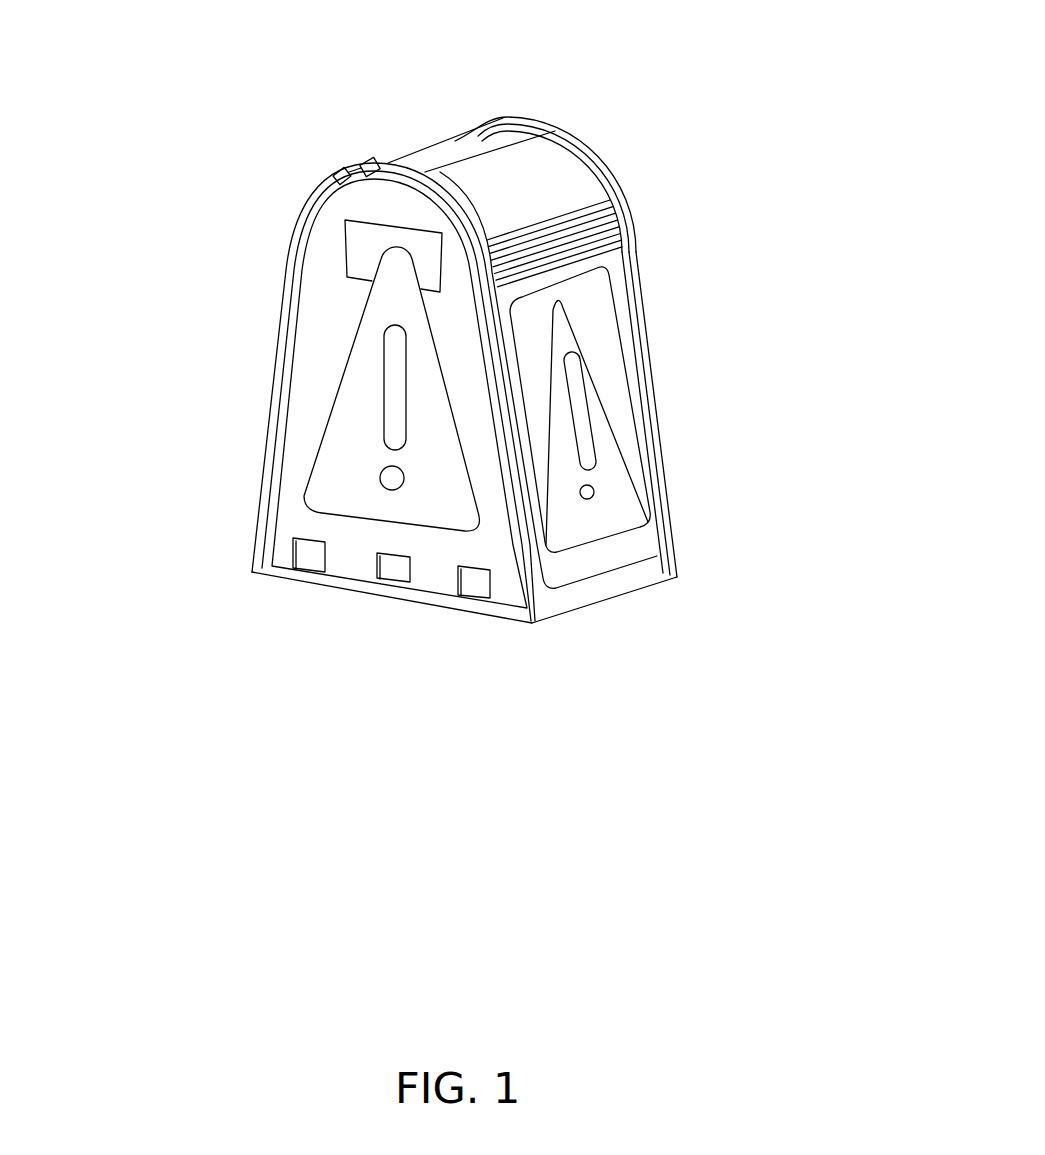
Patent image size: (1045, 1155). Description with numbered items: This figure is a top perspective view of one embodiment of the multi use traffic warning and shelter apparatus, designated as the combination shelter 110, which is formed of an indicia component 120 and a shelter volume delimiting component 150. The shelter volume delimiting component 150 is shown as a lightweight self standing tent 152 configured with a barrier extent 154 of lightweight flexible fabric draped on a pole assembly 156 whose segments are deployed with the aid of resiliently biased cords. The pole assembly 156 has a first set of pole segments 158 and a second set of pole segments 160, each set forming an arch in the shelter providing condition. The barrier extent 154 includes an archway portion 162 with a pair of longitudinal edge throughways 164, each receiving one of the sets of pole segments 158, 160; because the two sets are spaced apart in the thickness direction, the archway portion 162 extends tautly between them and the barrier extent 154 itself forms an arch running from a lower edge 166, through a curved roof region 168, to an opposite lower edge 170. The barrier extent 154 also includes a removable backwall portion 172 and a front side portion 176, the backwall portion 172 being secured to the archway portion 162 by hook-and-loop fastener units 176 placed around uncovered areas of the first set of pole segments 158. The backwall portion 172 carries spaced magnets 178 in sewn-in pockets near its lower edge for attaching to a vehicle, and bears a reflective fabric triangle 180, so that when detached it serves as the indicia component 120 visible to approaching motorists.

The combination shelter 110 is at (232, 350).
The indicia component 120 is at (563, 337).
The shelter volume delimiting component 150 is at (527, 345).
The tent 152 is at (578, 427).
The barrier extent 154 is at (558, 190).
The pole assembly 156 is at (280, 318).
The first set of pole segments 158 is at (273, 398).
The second set of pole segments 160 is at (637, 292).
The archway portion 162 is at (418, 152).
The longitudinal edge throughways 164 is at (655, 470).
The lower edge 166 is at (254, 573).
The curved roof region 168 is at (497, 162).
The opposite lower edge 170 is at (553, 620).
The backwall portion 172 is at (343, 228).
The hook-and-loop fastener units 176 is at (330, 170).
The magnets 178 is at (312, 550).
The triangle 180 is at (430, 517).